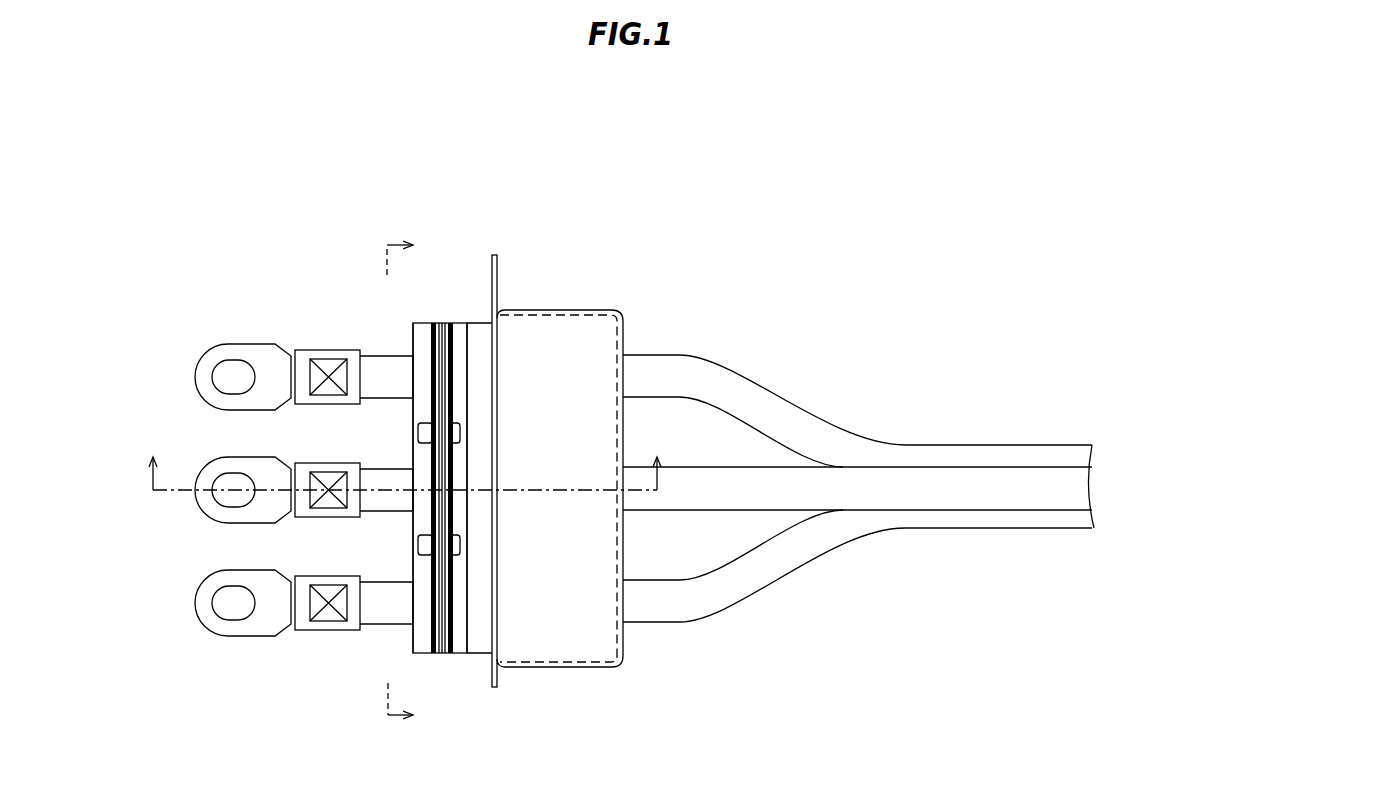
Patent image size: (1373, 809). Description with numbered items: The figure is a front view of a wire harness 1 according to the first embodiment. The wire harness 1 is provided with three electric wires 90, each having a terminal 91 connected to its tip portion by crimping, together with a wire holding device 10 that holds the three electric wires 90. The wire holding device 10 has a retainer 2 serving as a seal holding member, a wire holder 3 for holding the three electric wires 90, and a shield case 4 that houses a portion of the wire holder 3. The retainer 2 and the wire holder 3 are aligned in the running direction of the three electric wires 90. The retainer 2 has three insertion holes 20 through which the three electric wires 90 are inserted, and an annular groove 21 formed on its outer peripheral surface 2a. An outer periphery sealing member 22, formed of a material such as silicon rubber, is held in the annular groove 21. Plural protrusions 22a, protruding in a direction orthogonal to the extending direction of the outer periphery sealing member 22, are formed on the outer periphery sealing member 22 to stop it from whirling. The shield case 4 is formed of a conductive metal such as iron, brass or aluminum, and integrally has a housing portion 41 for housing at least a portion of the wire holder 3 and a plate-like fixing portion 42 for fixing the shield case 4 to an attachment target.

The wire harness 1 is at (242, 243).
The retainer 2 is at (410, 318).
The outer peripheral surface 2a is at (420, 646).
The wire holder 3 is at (475, 318).
The shield case 4 is at (792, 228).
The wire holding device 10 is at (525, 205).
The insertion hole 20 is at (402, 347).
The annular groove 21 is at (441, 655).
The outer periphery sealing member 22 is at (449, 655).
The protrusion 22a is at (418, 430).
The housing portion 41 is at (560, 325).
The fixing portion 42 is at (498, 275).
The electric wire 90 is at (1073, 518).
The terminal 91 is at (202, 365).